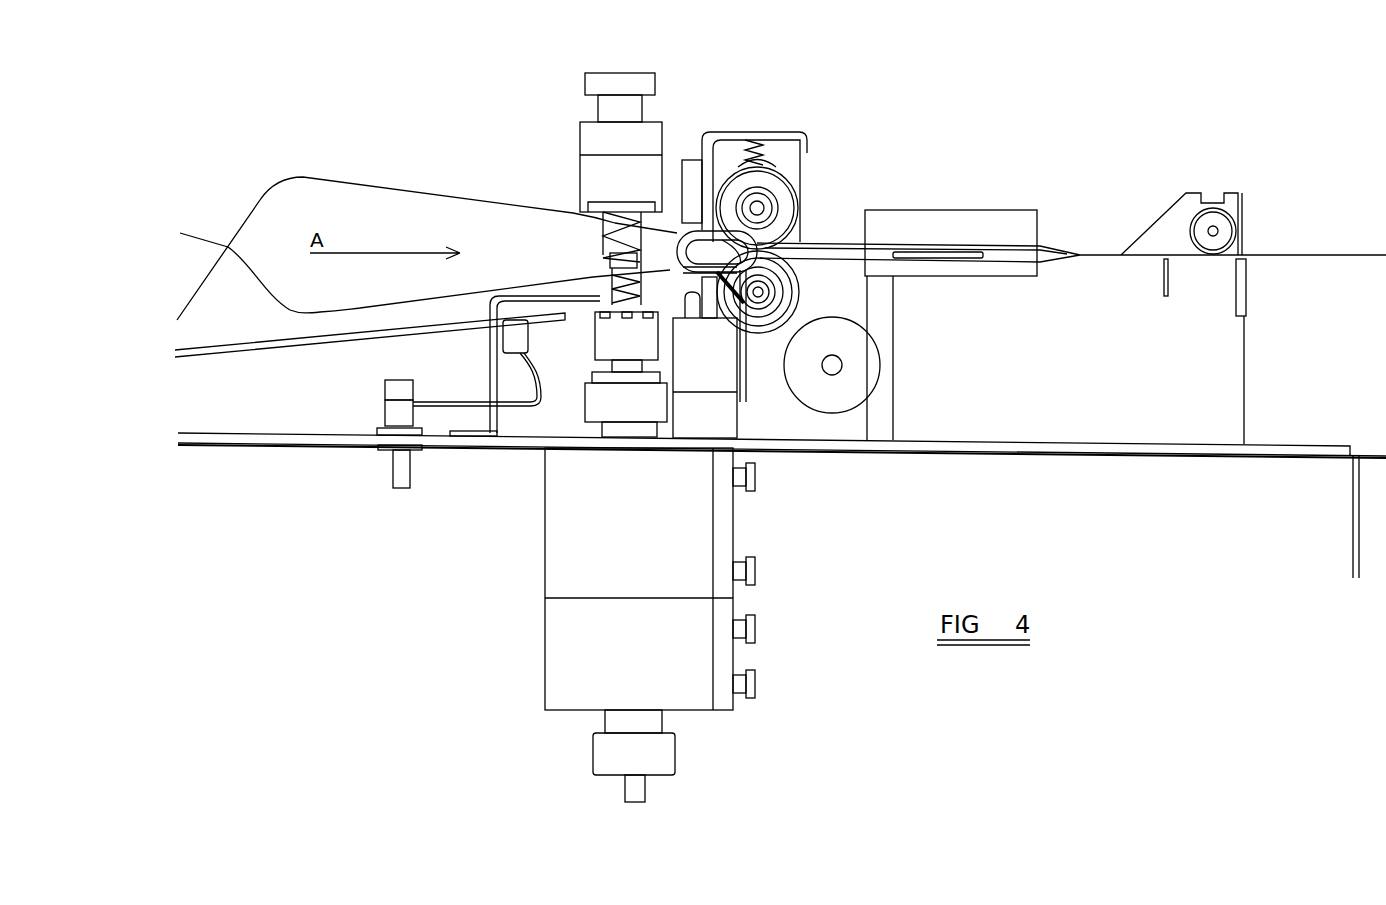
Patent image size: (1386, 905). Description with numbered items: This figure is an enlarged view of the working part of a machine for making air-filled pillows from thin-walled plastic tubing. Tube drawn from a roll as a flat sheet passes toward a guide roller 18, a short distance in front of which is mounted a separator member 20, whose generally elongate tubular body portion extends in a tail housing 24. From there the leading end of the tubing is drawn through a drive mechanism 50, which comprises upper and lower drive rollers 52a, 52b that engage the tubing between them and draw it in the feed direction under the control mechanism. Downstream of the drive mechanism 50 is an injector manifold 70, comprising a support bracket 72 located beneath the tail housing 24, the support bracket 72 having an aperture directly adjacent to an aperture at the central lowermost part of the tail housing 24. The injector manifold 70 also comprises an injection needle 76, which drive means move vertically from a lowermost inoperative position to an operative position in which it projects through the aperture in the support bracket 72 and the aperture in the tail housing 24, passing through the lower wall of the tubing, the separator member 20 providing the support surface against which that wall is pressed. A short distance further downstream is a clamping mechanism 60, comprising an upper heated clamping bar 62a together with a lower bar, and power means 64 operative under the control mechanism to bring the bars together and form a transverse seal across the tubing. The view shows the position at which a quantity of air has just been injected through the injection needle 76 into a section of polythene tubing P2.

The section of polythene tubing P2 is at (355, 161).
The guide roller 18 is at (1244, 221).
The separator member 20 is at (1062, 244).
The tail housing 24 is at (823, 244).
The drive mechanism 50 is at (774, 109).
The upper drive roller 52a is at (790, 187).
The lower drive roller 52b is at (800, 283).
The clamping mechanism 60 is at (643, 59).
The upper heated clamping bar 62a is at (600, 222).
The power means 64 is at (588, 84).
The injector manifold 70 is at (756, 424).
The support bracket 72 is at (747, 343).
The injection needle 76 is at (690, 300).